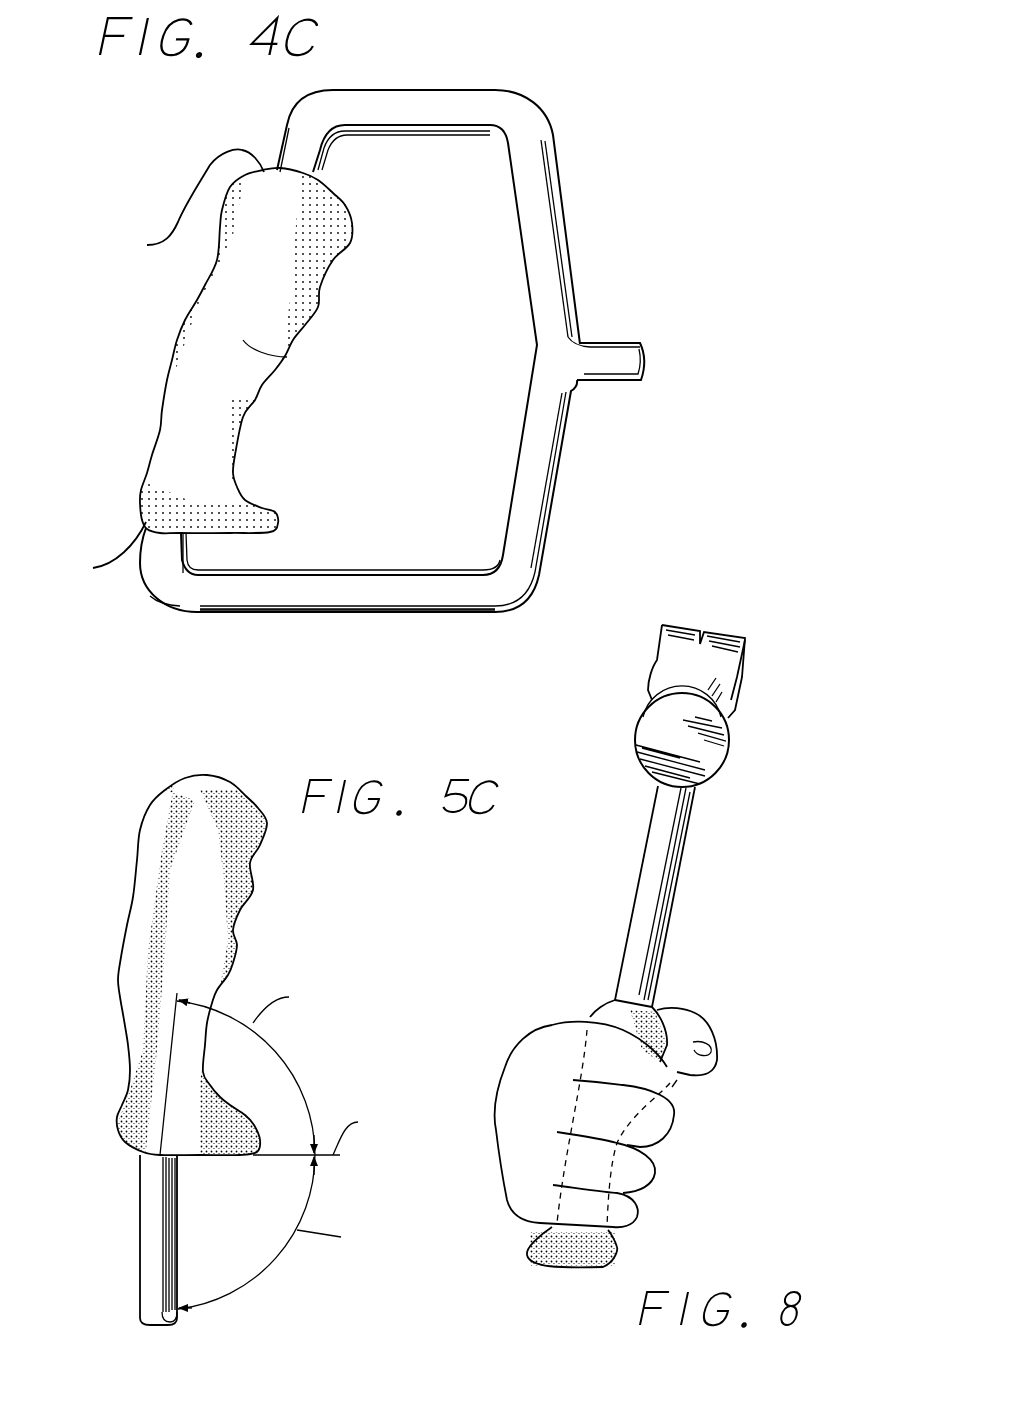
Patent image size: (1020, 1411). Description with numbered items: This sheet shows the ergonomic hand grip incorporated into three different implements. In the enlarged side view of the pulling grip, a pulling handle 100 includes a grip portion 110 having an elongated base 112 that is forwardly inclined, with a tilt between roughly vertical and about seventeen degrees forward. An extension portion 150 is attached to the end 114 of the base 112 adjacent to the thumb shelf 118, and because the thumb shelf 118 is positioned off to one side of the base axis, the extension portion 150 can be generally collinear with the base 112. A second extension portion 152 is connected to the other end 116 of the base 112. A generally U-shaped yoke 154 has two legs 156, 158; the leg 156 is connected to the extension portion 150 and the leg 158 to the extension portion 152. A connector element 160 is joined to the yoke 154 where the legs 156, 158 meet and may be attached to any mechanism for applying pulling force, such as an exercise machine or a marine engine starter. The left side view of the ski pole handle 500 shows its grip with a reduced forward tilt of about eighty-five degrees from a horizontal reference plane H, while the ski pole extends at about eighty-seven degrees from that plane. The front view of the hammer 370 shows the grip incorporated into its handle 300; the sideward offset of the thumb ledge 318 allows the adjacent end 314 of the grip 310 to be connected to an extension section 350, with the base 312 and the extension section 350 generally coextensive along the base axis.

In FIG. 4C, the pulling grip or handle 100 is at (556, 135).
In FIG. 4C, the grip portion 110 is at (163, 356).
In FIG. 4C, the elongated base 112 is at (287, 357).
In FIG. 4C, the end of the base 114 is at (182, 203).
In FIG. 4C, the other end of the base 116 is at (95, 554).
In FIG. 4C, the thumb shelf 118 is at (318, 210).
In FIG. 4C, the extension portion 150 is at (288, 140).
In FIG. 4C, the second extension portion 152 is at (163, 570).
In FIG. 4C, the U-shaped yoke 154 is at (405, 90).
In FIG. 4C, the yoke leg 156 is at (460, 107).
In FIG. 4C, the yoke leg 158 is at (390, 614).
In FIG. 4C, the connector element 160 is at (613, 343).
In FIG. 5C, the ski pole handle 500 is at (134, 812).
In FIG. 8, the handle 300 is at (616, 1250).
In FIG. 8, the grip 310 is at (596, 999).
In FIG. 8, the base 312 is at (581, 1049).
In FIG. 8, the end of the grip 314 is at (608, 998).
In FIG. 8, the thumb ledge 318 is at (668, 1042).
In FIG. 8, the extension section 350 is at (667, 925).
In FIG. 8, the hammer 370 is at (689, 877).